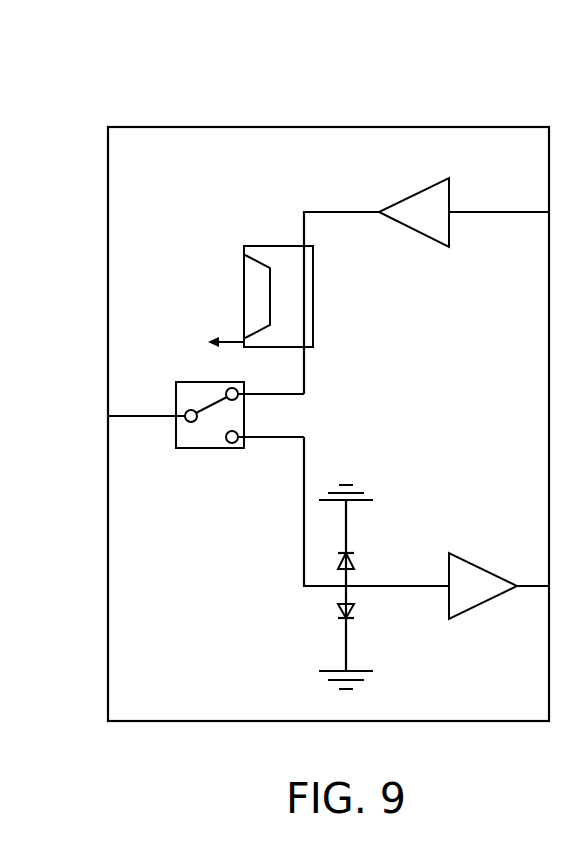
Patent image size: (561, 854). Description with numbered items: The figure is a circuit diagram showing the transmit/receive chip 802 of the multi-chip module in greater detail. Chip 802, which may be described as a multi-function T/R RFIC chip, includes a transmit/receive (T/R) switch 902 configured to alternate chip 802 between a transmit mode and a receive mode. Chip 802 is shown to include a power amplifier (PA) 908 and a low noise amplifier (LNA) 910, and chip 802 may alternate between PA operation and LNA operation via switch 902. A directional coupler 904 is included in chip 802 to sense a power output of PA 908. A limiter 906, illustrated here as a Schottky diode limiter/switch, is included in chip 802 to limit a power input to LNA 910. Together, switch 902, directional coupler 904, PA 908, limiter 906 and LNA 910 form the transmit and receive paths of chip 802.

The chip 802 is at (205, 82).
The power amplifier (PA) 908 is at (422, 228).
The directional coupler 904 is at (303, 327).
The transmit/receive (T/R) switch 902 is at (244, 410).
The limiter 906 is at (337, 607).
The low noise amplifier (LNA) 910 is at (462, 612).